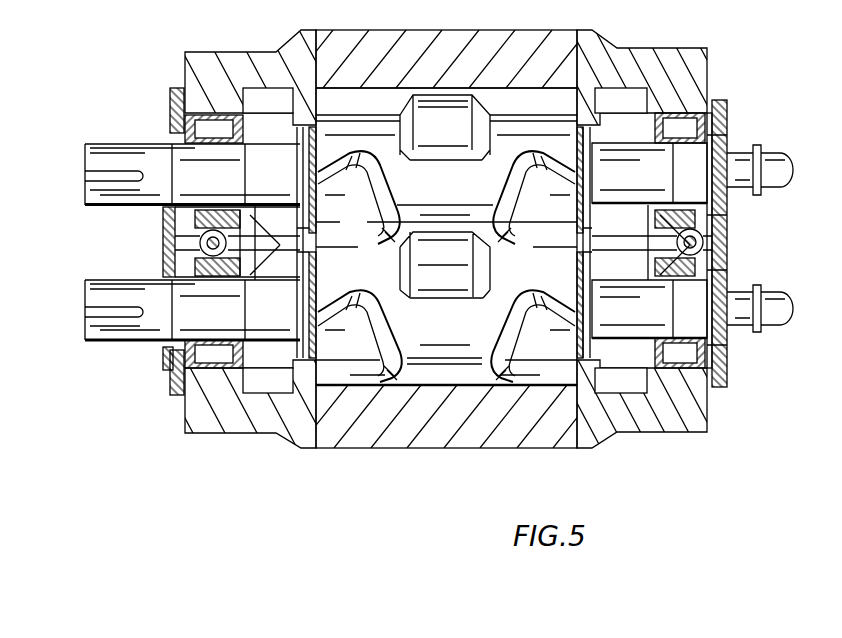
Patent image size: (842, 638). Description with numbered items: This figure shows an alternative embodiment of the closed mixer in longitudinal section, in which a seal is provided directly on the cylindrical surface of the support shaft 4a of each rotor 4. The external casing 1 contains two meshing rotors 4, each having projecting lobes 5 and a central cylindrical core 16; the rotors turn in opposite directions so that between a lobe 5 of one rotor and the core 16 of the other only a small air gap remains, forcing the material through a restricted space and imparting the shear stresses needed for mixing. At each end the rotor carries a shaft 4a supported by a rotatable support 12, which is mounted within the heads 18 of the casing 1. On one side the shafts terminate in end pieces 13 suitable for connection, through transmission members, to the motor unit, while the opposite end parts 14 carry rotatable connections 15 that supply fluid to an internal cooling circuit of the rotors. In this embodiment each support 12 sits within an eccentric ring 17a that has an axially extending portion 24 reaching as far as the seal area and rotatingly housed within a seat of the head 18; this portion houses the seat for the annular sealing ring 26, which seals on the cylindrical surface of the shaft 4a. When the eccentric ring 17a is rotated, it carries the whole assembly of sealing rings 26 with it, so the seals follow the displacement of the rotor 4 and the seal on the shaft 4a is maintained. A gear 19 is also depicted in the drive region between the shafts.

The external casing 1 is at (558, 47).
The rotor 4 is at (452, 210).
The shaft 4a is at (274, 191).
The lobe 5 is at (488, 120).
The rotatable support 12 is at (172, 100).
The end piece 13 is at (86, 162).
The opposite end part 14 is at (727, 198).
The rotatable connection 15 is at (784, 180).
The central cylindrical core 16 is at (364, 116).
The eccentric ring 17a is at (165, 236).
The head 18 is at (222, 420).
The gear 19 is at (165, 250).
The axially extending portion 24 is at (445, 242).
The annular sealing ring 26 is at (372, 156).